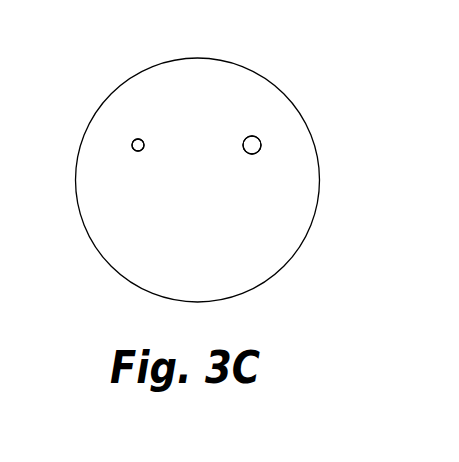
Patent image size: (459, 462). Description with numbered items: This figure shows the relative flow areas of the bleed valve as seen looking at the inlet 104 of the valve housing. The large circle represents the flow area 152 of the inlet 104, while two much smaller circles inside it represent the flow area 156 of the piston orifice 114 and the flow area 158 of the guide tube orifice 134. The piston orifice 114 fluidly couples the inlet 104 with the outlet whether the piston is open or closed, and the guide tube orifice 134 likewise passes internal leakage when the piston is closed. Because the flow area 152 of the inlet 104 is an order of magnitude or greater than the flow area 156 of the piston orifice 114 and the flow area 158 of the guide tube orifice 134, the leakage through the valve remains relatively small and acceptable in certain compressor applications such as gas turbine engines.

The inlet 104 is at (83, 228).
The piston orifice 114 is at (132, 147).
The guide tube orifice 134 is at (261, 151).
The flow area of inlet 152 is at (280, 210).
The flow area of piston orifice 156 is at (137, 139).
The flow area of guide tube orifice 158 is at (253, 136).